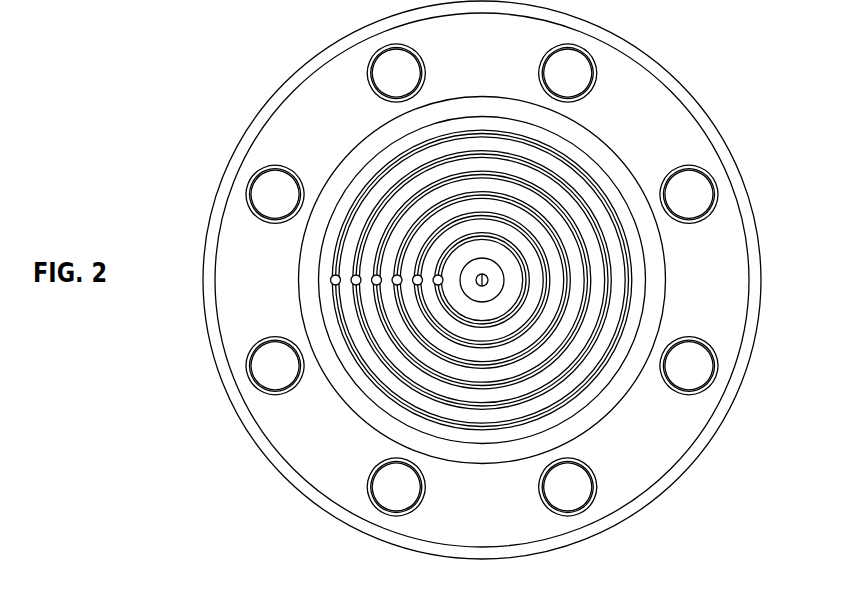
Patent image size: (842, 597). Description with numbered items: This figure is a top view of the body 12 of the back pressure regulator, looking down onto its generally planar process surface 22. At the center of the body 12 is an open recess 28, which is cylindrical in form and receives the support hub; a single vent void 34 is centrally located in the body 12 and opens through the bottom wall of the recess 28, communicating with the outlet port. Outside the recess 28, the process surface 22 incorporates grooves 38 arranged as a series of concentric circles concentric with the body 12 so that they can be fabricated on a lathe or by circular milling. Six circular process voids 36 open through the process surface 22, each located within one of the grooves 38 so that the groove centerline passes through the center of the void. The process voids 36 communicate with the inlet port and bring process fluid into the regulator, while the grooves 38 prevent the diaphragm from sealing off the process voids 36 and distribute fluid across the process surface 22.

The body 12 is at (719, 93).
The process surface 22 is at (663, 133).
The open recess 28 is at (503, 274).
The vent void 34 is at (486, 280).
The process void 36 is at (353, 278).
The grooves 38 is at (388, 368).